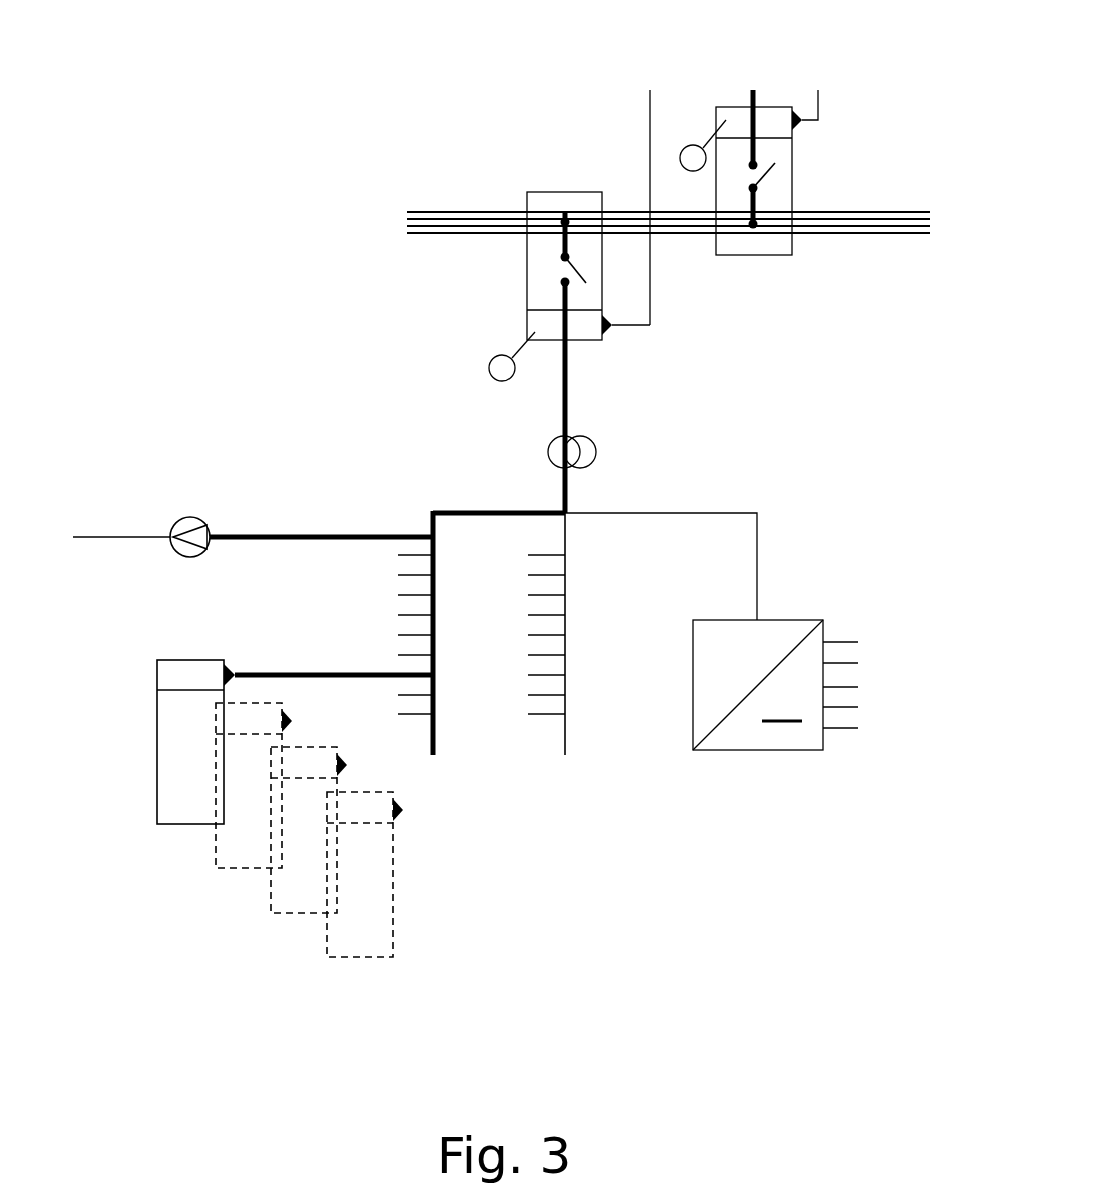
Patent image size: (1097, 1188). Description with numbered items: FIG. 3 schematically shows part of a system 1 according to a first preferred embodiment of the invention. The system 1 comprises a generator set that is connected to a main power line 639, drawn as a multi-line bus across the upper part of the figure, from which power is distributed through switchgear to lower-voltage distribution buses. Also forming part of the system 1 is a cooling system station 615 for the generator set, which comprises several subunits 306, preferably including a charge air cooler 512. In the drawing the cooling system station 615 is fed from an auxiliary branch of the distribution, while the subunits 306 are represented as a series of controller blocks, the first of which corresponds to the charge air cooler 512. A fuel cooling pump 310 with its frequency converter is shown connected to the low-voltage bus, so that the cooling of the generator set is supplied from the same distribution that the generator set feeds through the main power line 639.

The system 1 is at (352, 123).
The main power line 639 is at (425, 240).
The cooling system station 615 is at (645, 478).
The fuel cooling pump 310 is at (185, 517).
The charge air cooler 512 is at (178, 727).
The subunits 306 is at (177, 807).